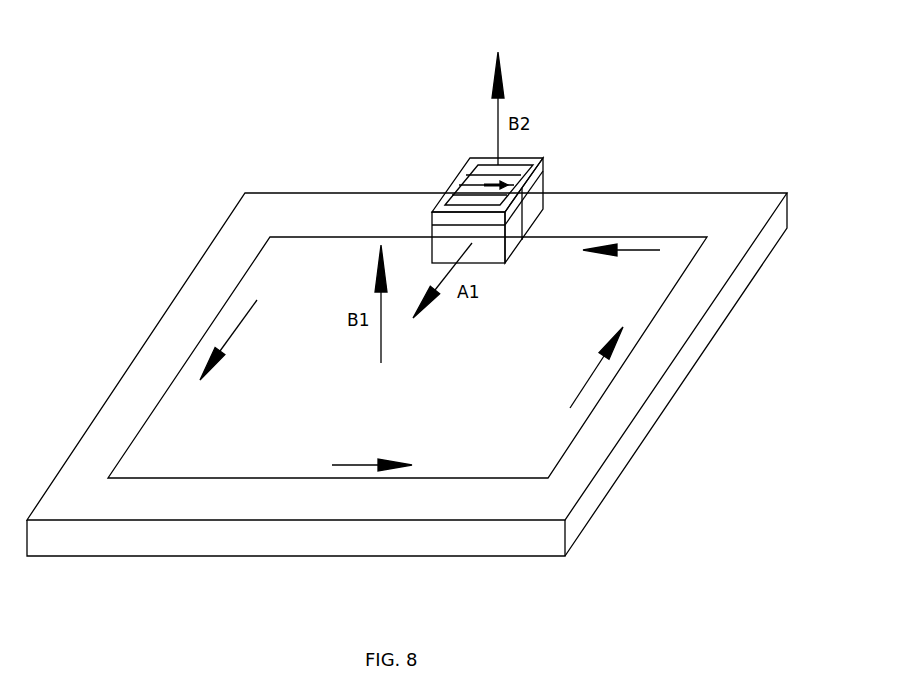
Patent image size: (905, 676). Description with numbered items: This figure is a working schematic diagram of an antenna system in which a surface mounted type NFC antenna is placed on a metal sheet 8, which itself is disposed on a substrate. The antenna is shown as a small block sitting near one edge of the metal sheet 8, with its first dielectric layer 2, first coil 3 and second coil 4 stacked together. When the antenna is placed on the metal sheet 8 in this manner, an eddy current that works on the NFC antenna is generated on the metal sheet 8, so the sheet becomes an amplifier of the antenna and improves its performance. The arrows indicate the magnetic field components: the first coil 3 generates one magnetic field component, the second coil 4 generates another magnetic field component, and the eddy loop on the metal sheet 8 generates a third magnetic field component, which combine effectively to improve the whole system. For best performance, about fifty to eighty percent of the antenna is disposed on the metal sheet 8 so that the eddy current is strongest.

The first dielectric layer 2 is at (720, 240).
The first coil 3 is at (552, 165).
The second coil 4 is at (460, 167).
The metal sheet 8 is at (607, 280).